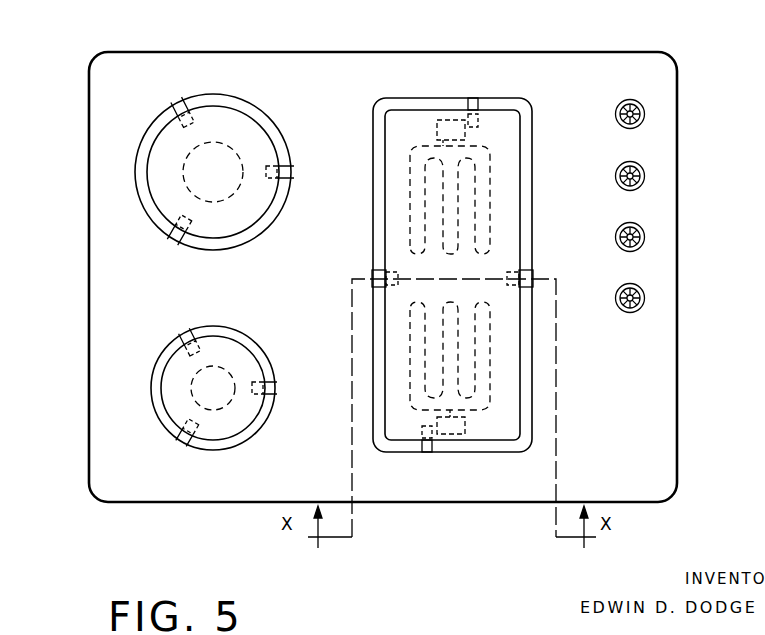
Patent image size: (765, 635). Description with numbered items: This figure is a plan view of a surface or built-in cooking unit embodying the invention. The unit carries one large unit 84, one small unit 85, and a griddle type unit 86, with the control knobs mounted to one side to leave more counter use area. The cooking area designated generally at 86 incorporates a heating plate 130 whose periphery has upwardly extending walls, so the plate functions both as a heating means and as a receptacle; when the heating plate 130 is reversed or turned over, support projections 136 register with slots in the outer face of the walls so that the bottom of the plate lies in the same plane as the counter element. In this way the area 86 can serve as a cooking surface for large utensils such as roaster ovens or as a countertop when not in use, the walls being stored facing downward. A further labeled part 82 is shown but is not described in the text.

The cooktop base / range top 82 is at (677, 349).
The large unit 84 is at (127, 156).
The small unit 85 is at (139, 366).
The griddle type unit 86 is at (487, 82).
The heating plate 130 is at (398, 180).
The support projections 136 is at (468, 103).